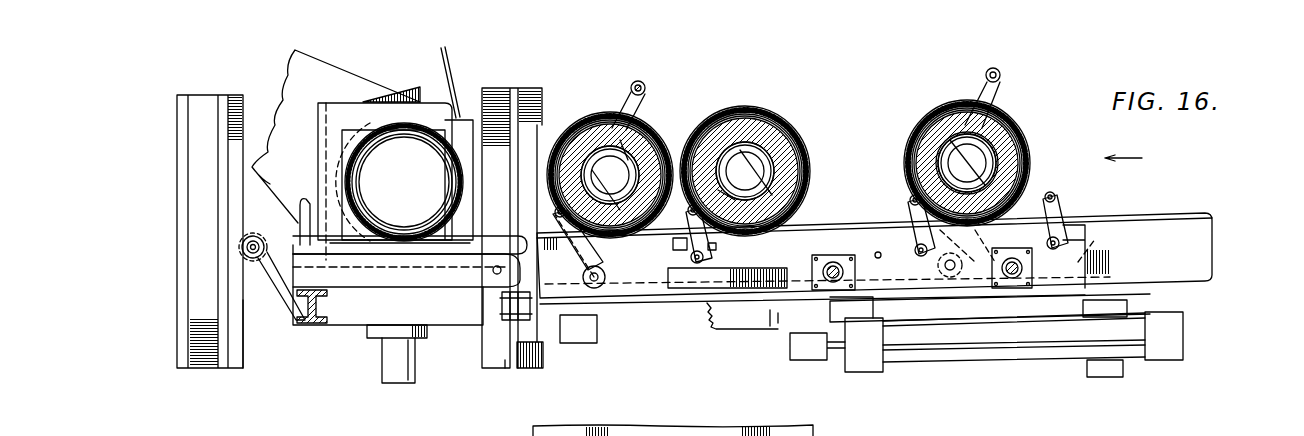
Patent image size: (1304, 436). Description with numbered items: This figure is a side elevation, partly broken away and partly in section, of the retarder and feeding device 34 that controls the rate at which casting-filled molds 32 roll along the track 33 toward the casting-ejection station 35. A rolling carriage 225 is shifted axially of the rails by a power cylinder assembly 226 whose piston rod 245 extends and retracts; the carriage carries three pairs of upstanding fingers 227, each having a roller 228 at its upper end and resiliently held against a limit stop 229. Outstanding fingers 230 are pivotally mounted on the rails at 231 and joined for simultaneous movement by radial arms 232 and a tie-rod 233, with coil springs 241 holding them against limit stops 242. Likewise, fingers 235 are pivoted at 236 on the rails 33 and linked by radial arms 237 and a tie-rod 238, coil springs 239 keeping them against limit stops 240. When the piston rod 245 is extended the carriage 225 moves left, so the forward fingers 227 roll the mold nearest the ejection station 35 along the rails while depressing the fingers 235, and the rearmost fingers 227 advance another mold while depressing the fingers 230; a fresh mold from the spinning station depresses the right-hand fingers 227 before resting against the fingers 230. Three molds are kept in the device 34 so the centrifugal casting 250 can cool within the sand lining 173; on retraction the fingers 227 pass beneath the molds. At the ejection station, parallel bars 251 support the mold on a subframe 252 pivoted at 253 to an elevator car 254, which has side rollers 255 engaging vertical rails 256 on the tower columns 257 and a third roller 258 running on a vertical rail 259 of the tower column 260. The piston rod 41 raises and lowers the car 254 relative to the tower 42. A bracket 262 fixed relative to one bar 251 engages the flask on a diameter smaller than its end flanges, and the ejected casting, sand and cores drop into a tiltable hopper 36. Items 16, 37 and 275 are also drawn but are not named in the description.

The roll 16 is at (432, 167).
The casting-filled mold 32 is at (661, 117).
The track 33 is at (1180, 226).
The retarder and feeding device 34 is at (856, 97).
The casting-ejection station 35 is at (420, 87).
The tiltable hopper 36 is at (292, 73).
The rod 37 is at (452, 72).
The piston rod 41 is at (381, 370).
The tower 42 is at (175, 212).
The sand lining 173 is at (1022, 138).
The rolling carriage 225 is at (836, 230).
The power cylinder assembly 226 is at (1102, 363).
The upstanding fingers 227 is at (652, 244).
The roller 228 is at (740, 226).
The limit stop 229 is at (712, 248).
The outstanding fingers 230 is at (938, 278).
The pivot 231 is at (958, 278).
The radial arms 232 is at (980, 85).
The tie-rod 233 is at (1002, 72).
The fingers 235 is at (540, 217).
The pivot 236 is at (606, 284).
The radial arms 237 is at (627, 106).
The tie-rod 238 is at (647, 79).
The coil springs 239 is at (712, 318).
The limit stops 240 is at (576, 258).
The coil springs 241 is at (1105, 265).
The limit stops 242 is at (960, 230).
The piston rod 245 is at (828, 362).
The centrifugal casting 250 is at (612, 155).
The parallel bars 251 is at (497, 237).
The subframe 252 is at (398, 273).
The pivot 253 is at (492, 270).
The elevator car 254 is at (456, 320).
The side rollers 255 is at (530, 318).
The vertical rails 256 is at (513, 366).
The tower columns 257 is at (493, 358).
The third roller 258 is at (272, 222).
The vertical rail 259 is at (238, 347).
The tower column 260 is at (207, 357).
The bracket 262 is at (348, 110).
The hook 275 is at (305, 200).